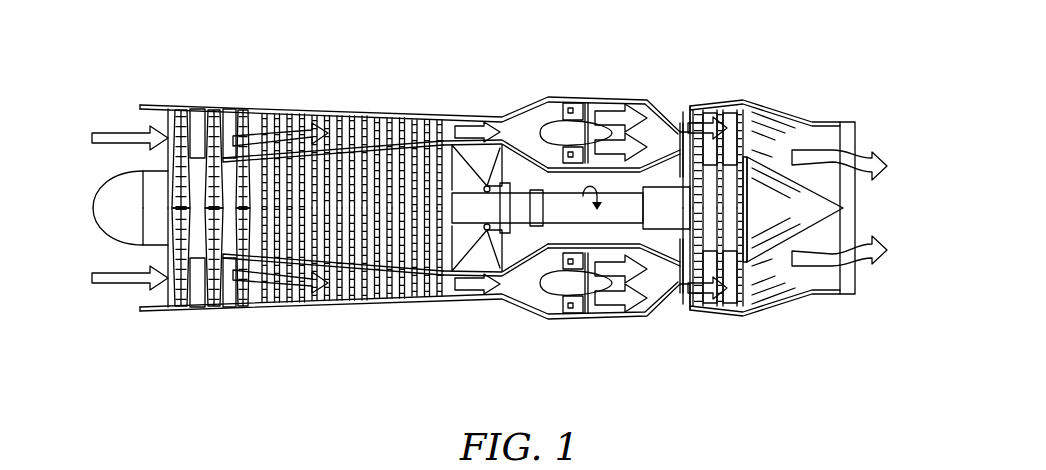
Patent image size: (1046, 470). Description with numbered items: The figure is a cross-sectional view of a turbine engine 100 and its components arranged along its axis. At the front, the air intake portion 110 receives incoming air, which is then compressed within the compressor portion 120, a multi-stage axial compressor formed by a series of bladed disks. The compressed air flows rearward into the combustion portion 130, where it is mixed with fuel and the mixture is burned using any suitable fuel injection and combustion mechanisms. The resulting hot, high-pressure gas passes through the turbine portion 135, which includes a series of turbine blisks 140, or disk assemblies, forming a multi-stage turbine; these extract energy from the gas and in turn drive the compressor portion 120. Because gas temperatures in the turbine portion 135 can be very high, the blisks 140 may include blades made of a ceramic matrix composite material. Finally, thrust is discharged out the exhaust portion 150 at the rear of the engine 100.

The turbine engine 100 is at (672, 83).
The air intake portion 110 is at (139, 295).
The compressor portion 120 is at (361, 175).
The combustion portion 130 is at (513, 300).
The turbine portion 135 is at (726, 227).
The turbine blisks 140 is at (759, 277).
The exhaust portion 150 is at (890, 236).